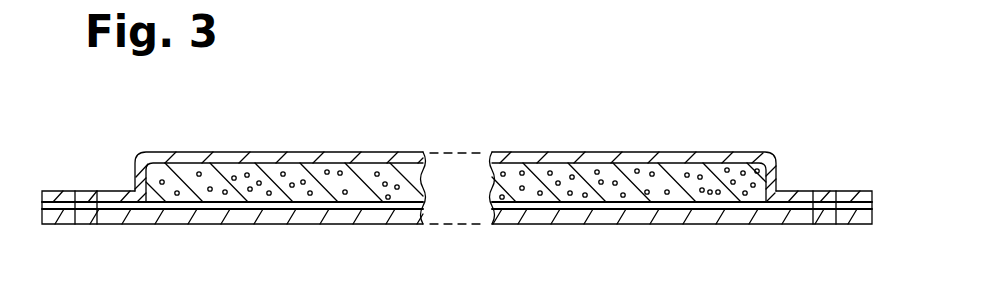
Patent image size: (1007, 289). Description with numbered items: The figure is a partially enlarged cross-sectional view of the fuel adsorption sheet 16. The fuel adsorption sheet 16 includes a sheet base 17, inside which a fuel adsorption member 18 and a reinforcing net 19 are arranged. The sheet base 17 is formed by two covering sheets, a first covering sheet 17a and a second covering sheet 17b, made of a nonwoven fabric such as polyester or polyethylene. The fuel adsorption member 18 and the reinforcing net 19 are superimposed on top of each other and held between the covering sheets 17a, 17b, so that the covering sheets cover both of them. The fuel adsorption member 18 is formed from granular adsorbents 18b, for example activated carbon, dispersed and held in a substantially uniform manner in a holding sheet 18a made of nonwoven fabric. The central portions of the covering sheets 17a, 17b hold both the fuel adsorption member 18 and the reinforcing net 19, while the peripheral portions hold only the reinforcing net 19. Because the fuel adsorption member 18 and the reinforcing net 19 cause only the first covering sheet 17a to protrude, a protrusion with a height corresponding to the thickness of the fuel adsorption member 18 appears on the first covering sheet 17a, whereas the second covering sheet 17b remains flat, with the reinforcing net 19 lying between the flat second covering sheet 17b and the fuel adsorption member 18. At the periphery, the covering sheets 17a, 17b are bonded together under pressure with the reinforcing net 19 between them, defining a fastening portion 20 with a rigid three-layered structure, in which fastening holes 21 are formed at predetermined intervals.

The fuel adsorption sheet 16 is at (145, 135).
The sheet base 17 is at (288, 152).
The first covering sheet 17a is at (362, 158).
The second covering sheet 17b is at (339, 214).
The fuel adsorption member 18 is at (558, 163).
The holding sheet 18a is at (628, 170).
The granular adsorbents 18b is at (700, 175).
The reinforcing net 19 is at (265, 206).
The fastening portion 20 is at (53, 190).
The fastening holes 21 is at (97, 204).